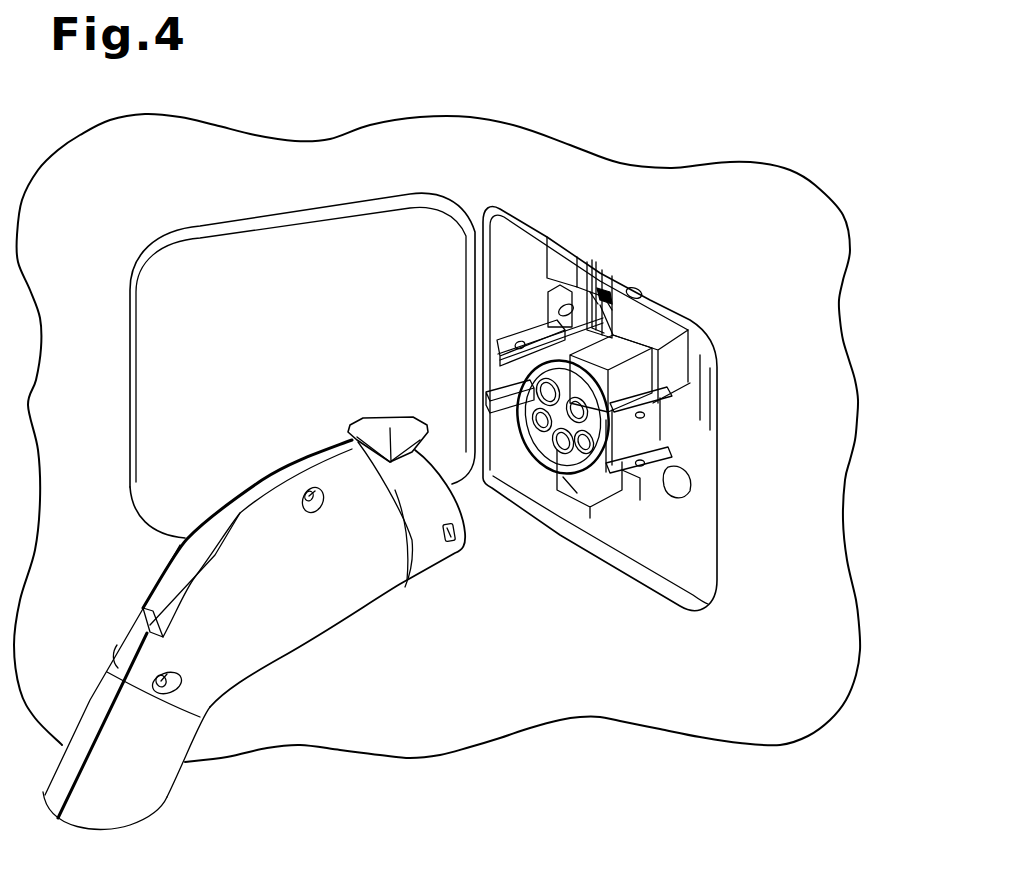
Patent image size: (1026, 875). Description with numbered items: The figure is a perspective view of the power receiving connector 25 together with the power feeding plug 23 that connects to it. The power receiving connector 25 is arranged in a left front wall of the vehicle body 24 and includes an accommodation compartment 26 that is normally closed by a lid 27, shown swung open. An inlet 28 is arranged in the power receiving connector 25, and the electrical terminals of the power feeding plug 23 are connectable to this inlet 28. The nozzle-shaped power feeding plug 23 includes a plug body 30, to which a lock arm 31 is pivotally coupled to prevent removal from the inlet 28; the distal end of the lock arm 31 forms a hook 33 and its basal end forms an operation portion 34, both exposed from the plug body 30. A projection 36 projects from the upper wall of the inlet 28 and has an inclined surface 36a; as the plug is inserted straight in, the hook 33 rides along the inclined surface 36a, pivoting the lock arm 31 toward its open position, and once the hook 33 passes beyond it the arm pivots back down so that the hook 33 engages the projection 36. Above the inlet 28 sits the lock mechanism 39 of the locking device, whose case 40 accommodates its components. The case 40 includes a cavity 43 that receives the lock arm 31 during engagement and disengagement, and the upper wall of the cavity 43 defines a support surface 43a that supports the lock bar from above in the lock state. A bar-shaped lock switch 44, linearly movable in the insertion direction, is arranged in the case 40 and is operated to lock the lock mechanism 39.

The power feeding plug 23 is at (365, 611).
The vehicle body panel 24 is at (819, 526).
The power receiving connector 25 is at (645, 508).
The accommodation compartment 26 is at (709, 520).
The lid 27 is at (222, 250).
The inlet 28 is at (557, 477).
The plug body 30 is at (305, 633).
The lock arm 31 is at (356, 430).
The hook 33 is at (386, 437).
The operation portion 34 is at (176, 552).
The projection 36 is at (557, 355).
The inclined surface 36a is at (578, 327).
The lock mechanism 39 is at (655, 318).
The case 40 is at (692, 320).
The cavity 43 is at (601, 292).
The support surface 43a is at (612, 295).
The lock switch 44 is at (648, 385).